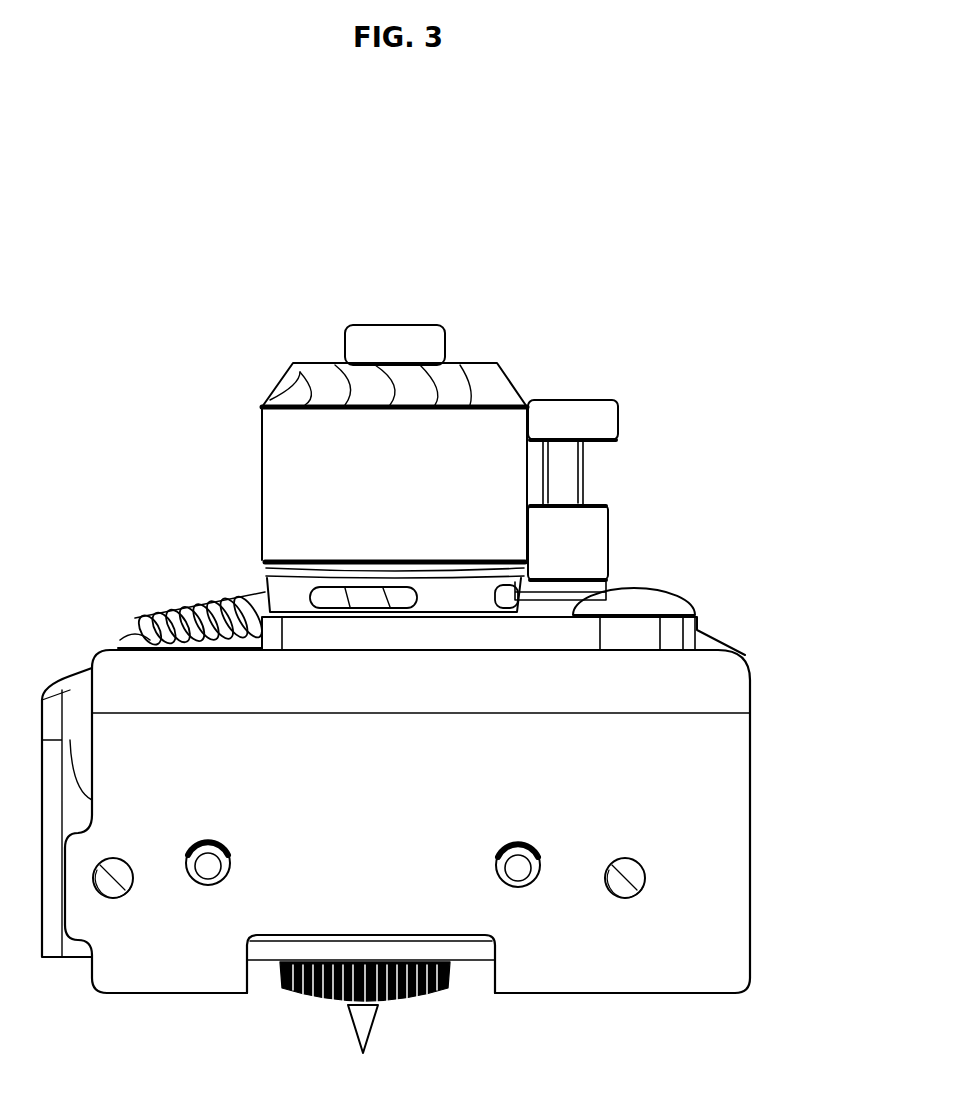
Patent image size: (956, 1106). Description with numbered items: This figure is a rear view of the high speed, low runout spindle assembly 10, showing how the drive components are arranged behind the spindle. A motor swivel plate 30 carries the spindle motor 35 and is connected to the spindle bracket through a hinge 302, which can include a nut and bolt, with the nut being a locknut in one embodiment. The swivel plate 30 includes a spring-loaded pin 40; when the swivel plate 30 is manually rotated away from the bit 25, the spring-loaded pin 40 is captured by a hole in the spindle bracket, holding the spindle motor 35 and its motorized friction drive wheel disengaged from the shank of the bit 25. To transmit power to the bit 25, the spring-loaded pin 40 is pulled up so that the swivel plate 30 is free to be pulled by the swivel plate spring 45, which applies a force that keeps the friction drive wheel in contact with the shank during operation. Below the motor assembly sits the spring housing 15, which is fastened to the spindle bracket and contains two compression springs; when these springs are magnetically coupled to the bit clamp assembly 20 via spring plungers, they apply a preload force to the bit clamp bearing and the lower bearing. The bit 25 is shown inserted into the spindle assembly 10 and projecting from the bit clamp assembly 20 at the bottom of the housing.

The spindle assembly 10 is at (403, 246).
The spring housing 15 is at (740, 808).
The bit clamp assembly 20 is at (262, 985).
The bit 25 is at (378, 1020).
The motor swivel plate 30 is at (700, 628).
The hinge 302 is at (655, 590).
The spindle motor 35 is at (258, 435).
The spring-loaded pin 40 is at (612, 420).
The swivel plate spring 45 is at (140, 612).